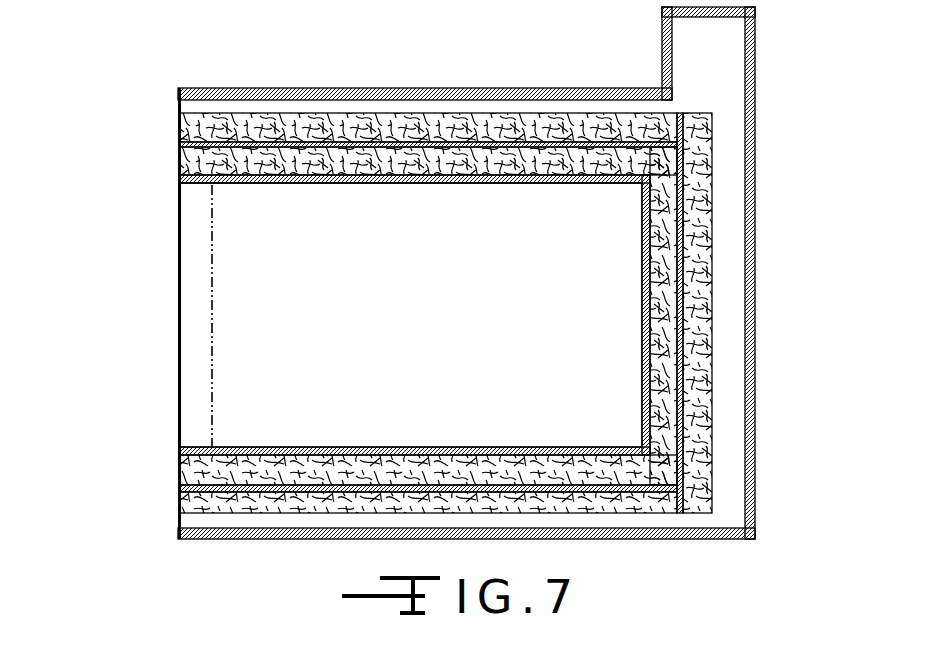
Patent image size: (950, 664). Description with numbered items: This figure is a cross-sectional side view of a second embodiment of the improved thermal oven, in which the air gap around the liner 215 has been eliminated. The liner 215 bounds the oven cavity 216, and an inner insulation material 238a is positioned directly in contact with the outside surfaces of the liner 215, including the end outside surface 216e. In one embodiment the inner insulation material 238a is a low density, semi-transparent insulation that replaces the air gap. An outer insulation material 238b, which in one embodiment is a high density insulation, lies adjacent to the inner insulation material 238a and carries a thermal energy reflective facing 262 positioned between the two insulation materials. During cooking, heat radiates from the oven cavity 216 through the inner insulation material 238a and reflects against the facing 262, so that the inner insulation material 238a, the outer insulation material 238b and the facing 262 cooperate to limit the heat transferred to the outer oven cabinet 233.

The outer oven cabinet 233 is at (755, 70).
The inner insulation material 238a is at (178, 160).
The outer insulation material 238b is at (288, 113).
The thermal energy reflective facing 262 is at (533, 142).
The oven cavity 216 is at (415, 322).
The outside surface of the liner 216e is at (653, 270).
The liner 215 is at (273, 184).